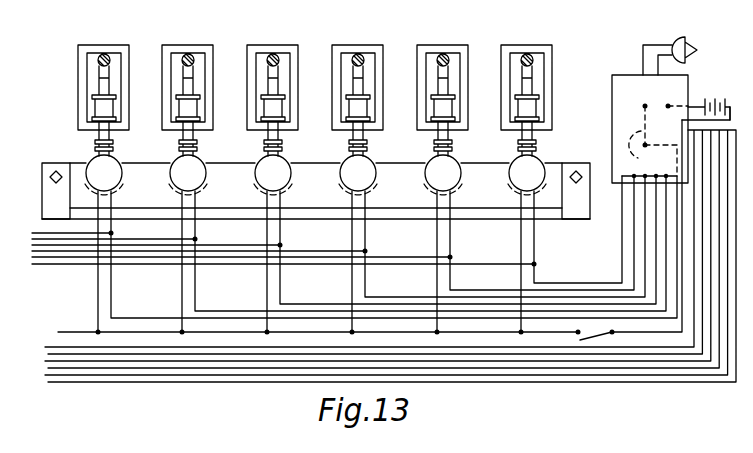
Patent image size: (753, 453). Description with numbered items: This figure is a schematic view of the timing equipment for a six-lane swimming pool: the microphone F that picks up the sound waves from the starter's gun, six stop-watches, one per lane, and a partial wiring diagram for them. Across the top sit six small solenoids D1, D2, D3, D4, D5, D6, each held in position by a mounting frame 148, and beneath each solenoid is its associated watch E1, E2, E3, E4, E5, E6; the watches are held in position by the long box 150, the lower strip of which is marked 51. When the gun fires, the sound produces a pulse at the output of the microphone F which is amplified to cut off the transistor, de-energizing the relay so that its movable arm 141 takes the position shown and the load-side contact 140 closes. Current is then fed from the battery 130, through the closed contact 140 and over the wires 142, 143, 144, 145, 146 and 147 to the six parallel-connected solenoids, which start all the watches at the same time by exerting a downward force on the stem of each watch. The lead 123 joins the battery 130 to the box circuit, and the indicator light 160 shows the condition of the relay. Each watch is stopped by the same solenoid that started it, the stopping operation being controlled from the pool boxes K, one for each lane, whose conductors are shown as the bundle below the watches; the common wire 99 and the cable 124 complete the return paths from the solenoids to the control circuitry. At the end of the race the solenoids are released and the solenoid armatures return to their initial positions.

The small solenoid D1 is at (116, 100).
The small solenoid D2 is at (200, 100).
The small solenoid D3 is at (285, 100).
The small solenoid D4 is at (370, 100).
The small solenoid D5 is at (455, 100).
The small solenoid D6 is at (539, 100).
The watch E1 is at (119, 166).
The watch E2 is at (203, 166).
The watch E3 is at (288, 166).
The watch E4 is at (373, 166).
The watch E5 is at (458, 166).
The watch E6 is at (542, 166).
The mounting frame 148 is at (540, 72).
The long box 150 is at (80, 195).
The supply conduit 51 is at (77, 215).
The pool box K is at (28, 228).
The indicator light bulb 160 is at (28, 265).
The wire 147 is at (130, 316).
The wire 146 is at (210, 309).
The wire 145 is at (301, 291).
The wire 144 is at (384, 284).
The wire 143 is at (469, 277).
The wire 142 is at (551, 270).
The wire 99 is at (86, 332).
The cable 124 is at (42, 383).
The contact 140 is at (655, 92).
The movable arm 141 is at (653, 153).
The battery 130 is at (715, 100).
The lead wire 123 is at (734, 112).
The microphone F is at (697, 50).